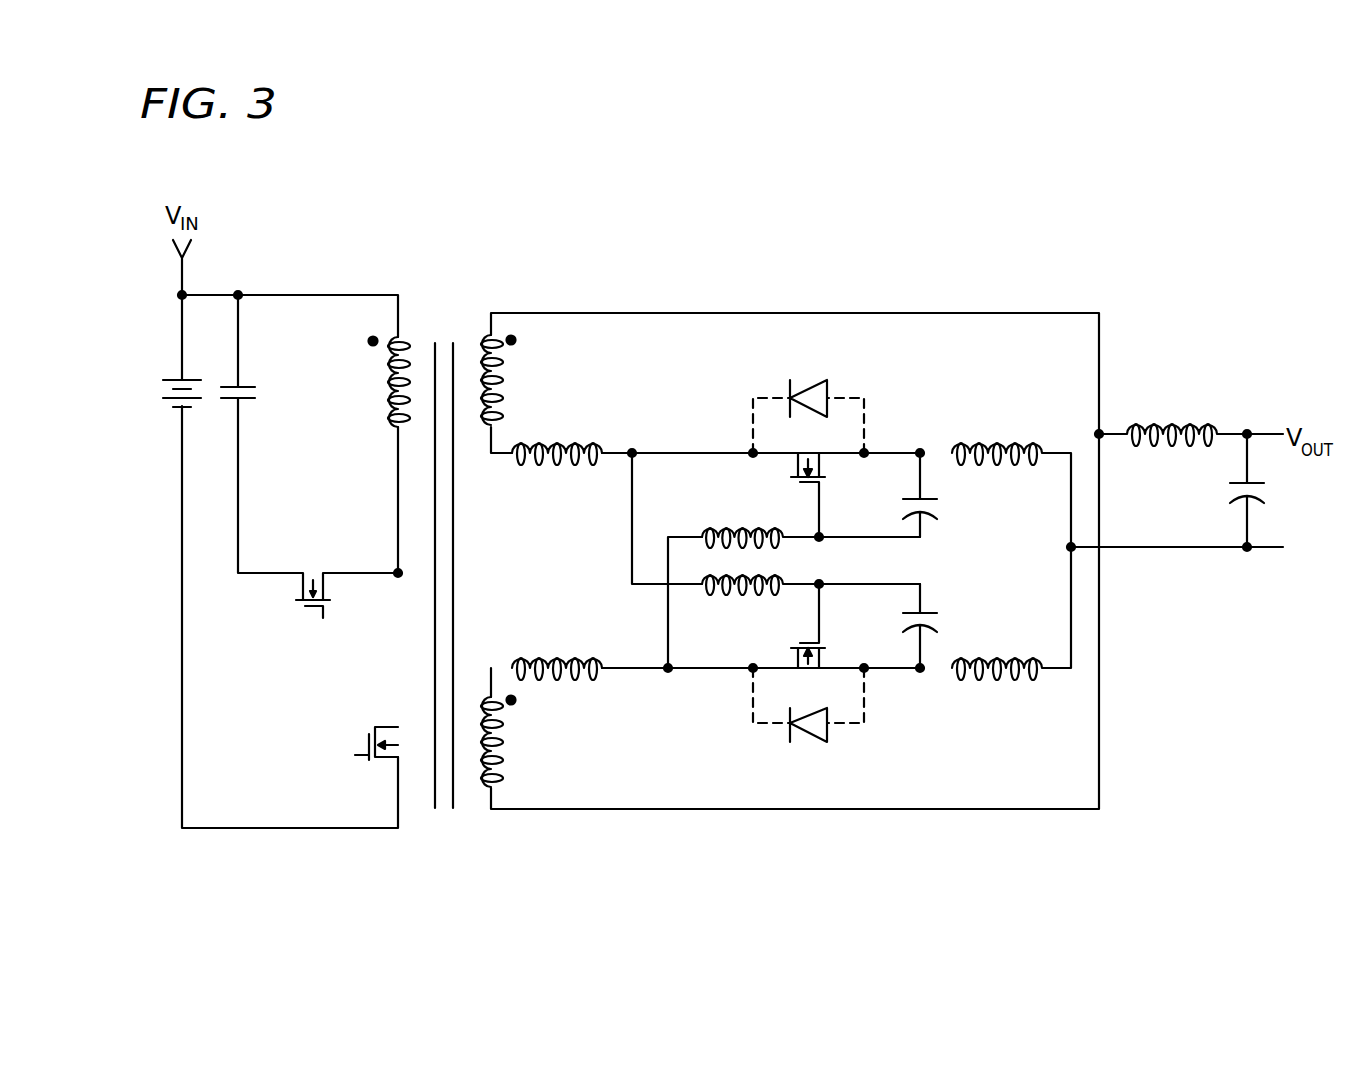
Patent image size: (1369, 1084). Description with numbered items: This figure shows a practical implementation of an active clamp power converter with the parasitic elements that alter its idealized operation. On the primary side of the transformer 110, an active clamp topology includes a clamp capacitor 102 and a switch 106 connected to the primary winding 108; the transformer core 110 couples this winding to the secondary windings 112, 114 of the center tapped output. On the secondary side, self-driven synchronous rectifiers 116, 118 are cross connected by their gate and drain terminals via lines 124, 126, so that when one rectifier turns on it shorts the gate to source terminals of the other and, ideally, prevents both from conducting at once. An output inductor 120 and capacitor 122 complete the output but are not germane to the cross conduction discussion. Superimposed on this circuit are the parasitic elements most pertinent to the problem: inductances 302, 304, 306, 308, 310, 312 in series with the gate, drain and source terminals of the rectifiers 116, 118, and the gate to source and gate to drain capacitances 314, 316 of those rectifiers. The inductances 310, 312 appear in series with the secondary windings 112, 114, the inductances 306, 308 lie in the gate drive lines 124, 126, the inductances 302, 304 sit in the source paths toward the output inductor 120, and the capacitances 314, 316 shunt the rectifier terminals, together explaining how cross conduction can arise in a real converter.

The clamp capacitor 102 is at (256, 396).
The switch 106 is at (370, 766).
The primary winding 108 is at (386, 404).
The transformer 110 is at (443, 340).
The first secondary winding 112 is at (505, 385).
The second secondary winding 114 is at (508, 738).
The self-driven synchronous rectifier 116 is at (828, 486).
The self-driven synchronous rectifier 118 is at (828, 641).
The output inductor 120 is at (1168, 420).
The capacitor 122 is at (1228, 490).
The line 124 is at (636, 492).
The line 126 is at (668, 632).
The parasitic inductance 302 is at (1008, 440).
The parasitic inductance 304 is at (1006, 688).
The parasitic inductance 306 is at (742, 526).
The parasitic inductance 308 is at (738, 598).
The parasitic inductance 310 is at (551, 468).
The parasitic inductance 312 is at (547, 650).
The gate to source capacitance 314 is at (940, 512).
The gate to drain capacitance 316 is at (940, 626).